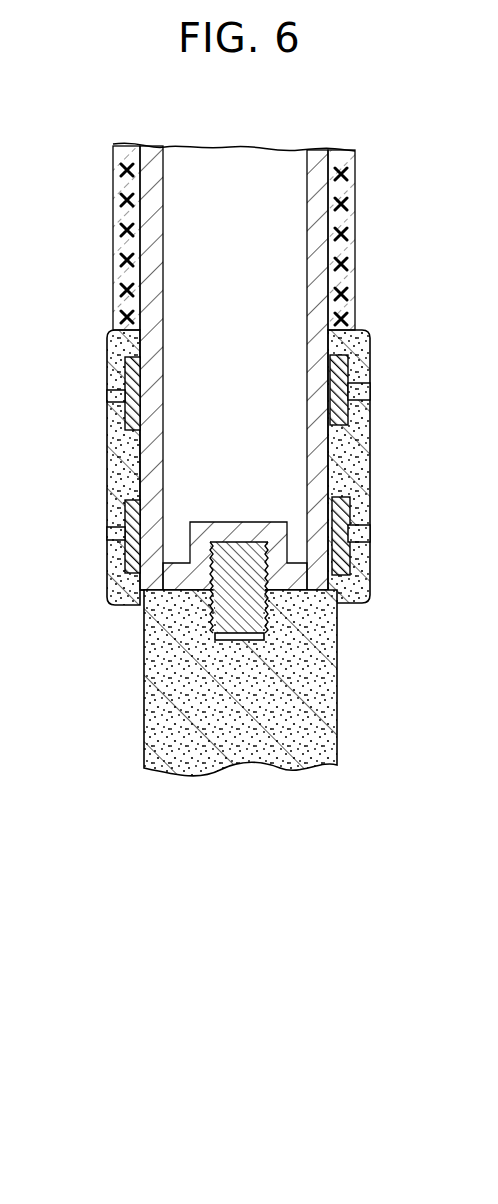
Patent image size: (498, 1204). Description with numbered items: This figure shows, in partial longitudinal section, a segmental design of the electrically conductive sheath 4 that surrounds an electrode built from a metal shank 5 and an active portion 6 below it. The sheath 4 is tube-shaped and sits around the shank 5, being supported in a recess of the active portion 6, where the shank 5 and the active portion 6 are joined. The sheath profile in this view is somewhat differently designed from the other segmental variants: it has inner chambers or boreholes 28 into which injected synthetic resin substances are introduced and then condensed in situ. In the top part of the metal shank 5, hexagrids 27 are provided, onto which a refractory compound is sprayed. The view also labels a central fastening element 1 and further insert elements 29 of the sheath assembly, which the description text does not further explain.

The anchor screw 1 is at (243, 545).
The electrically conductive sheath 4 is at (104, 465).
The metal shank 5 is at (153, 158).
The active portion 6 is at (242, 762).
The hexagrids 27 is at (118, 215).
The inner chambers or boreholes 28 is at (370, 392).
The clamping ring 29 is at (128, 368).